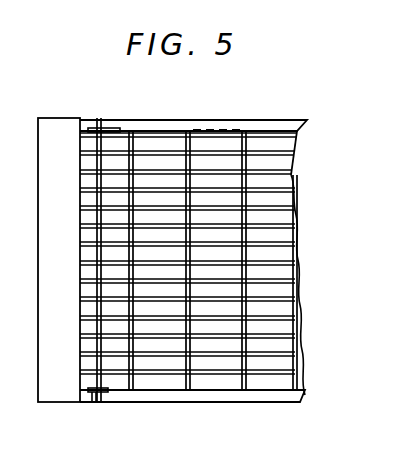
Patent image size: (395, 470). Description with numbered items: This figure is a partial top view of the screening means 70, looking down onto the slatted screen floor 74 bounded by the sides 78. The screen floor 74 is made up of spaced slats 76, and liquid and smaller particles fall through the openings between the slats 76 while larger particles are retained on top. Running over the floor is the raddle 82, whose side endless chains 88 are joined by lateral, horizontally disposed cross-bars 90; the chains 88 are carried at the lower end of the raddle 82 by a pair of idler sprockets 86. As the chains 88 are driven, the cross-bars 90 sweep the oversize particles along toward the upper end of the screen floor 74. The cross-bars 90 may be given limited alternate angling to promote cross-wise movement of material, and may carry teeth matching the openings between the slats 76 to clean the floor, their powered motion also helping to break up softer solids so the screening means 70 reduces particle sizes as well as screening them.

The screening means 70 is at (134, 407).
The screen floor 74 is at (60, 133).
The slats 76 is at (253, 325).
The sides 78 is at (243, 122).
The raddle 82 is at (88, 398).
The idler sprockets 86 is at (109, 128).
The side endless chains 88 is at (268, 131).
The cross-bars 90 is at (132, 133).